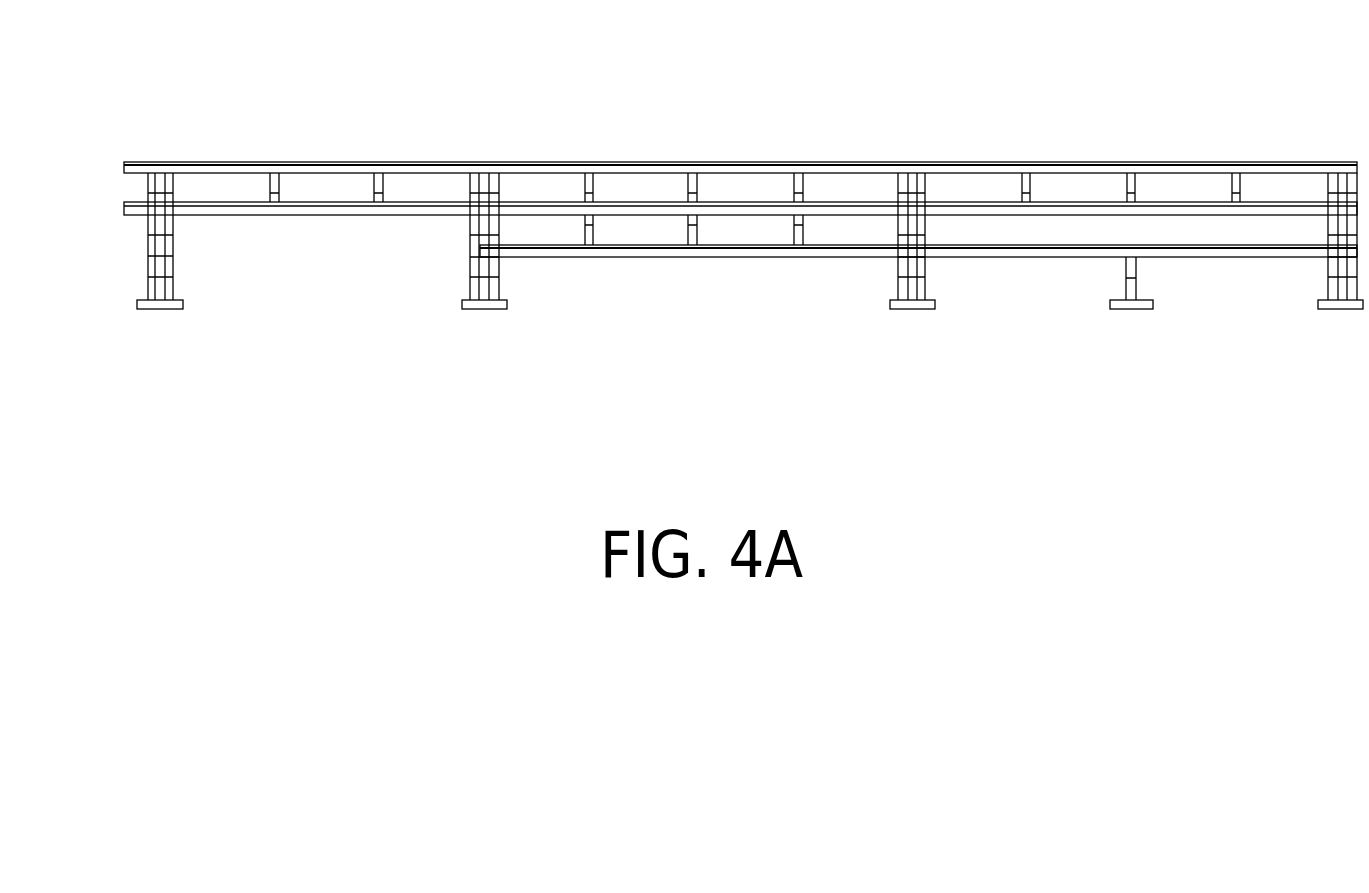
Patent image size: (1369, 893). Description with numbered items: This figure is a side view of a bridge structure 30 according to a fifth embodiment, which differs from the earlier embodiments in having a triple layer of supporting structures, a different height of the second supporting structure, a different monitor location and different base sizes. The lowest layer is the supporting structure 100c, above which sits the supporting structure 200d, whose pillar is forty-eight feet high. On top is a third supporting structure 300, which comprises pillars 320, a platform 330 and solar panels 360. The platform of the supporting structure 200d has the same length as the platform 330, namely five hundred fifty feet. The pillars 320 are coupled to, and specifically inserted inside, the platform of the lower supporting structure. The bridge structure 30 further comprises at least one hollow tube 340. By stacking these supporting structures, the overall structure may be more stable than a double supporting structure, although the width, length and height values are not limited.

The bridge structure 30 is at (1277, 478).
The supporting structure 200d is at (348, 120).
The platform 330 is at (1089, 192).
The solar panels 360 is at (1221, 212).
The pillars 320 is at (1318, 232).
The third supporting structure 300 is at (133, 233).
The supporting structure 100c is at (1030, 292).
The hollow tube 340 is at (1332, 205).